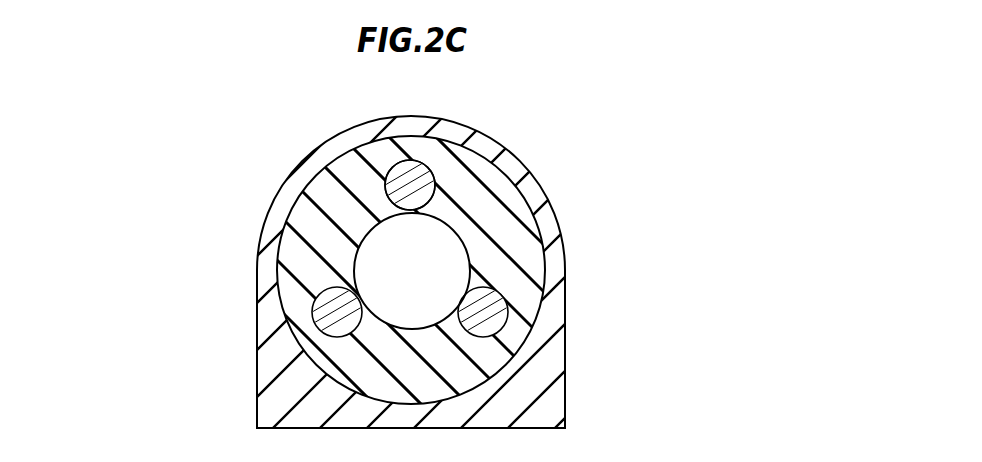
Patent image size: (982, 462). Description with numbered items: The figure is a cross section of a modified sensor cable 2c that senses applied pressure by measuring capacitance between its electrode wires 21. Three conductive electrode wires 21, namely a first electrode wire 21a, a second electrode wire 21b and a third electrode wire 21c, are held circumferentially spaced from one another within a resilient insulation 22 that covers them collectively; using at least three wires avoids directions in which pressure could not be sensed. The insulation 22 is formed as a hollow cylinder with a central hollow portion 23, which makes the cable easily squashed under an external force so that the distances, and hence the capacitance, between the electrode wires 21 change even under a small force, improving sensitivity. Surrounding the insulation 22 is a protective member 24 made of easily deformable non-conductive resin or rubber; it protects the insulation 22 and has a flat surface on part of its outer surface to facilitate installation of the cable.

The sensor cable 2c is at (319, 133).
The electrode wires 21 is at (426, 163).
The first electrode wire 21a is at (407, 176).
The second electrode wire 21b is at (498, 321).
The third electrode wire 21c is at (326, 322).
The insulation 22 is at (507, 200).
The hollow portion 23 is at (458, 255).
The protective member 24 is at (550, 300).